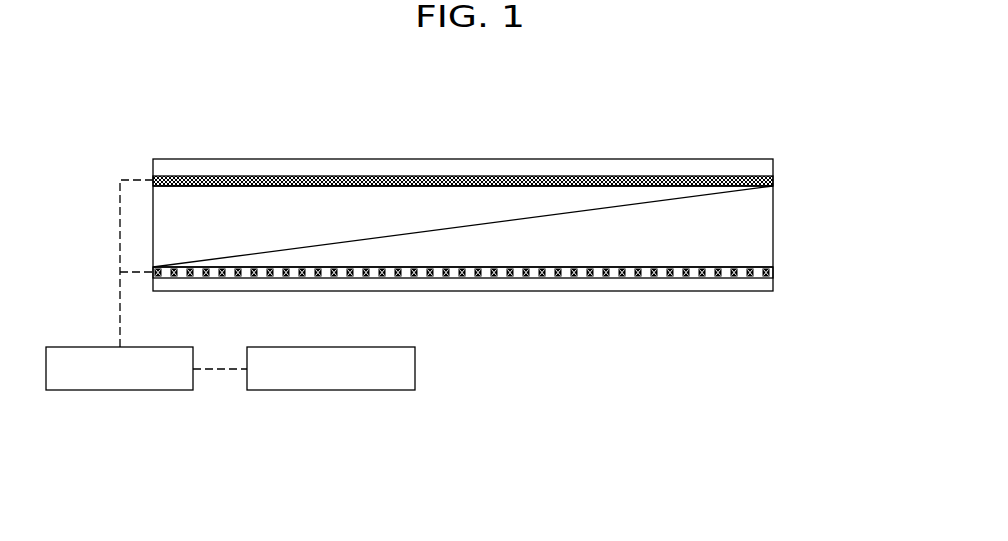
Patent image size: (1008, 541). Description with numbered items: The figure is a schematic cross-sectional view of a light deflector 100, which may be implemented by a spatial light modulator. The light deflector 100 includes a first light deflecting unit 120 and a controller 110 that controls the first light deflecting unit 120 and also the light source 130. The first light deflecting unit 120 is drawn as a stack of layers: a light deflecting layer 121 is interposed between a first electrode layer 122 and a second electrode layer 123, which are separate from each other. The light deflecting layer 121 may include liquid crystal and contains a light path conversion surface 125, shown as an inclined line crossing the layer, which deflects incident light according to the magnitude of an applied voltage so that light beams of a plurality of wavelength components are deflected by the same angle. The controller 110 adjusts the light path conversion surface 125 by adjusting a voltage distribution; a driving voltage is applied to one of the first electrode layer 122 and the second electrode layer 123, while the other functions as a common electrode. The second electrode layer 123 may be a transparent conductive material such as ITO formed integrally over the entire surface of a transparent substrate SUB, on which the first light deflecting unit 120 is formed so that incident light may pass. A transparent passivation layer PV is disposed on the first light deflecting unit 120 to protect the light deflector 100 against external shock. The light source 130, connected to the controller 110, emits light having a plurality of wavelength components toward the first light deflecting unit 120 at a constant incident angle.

The light deflector 100 is at (829, 125).
The controller 110 is at (119, 390).
The first light deflecting unit 120 is at (838, 175).
The light deflecting layer 121 is at (773, 219).
The first electrode layer 122 is at (773, 271).
The second electrode layer 123 is at (773, 184).
The light path conversion surface 125 is at (582, 215).
The light source 130 is at (332, 390).
The passivation layer PV is at (773, 167).
The transparent substrate SUB is at (773, 286).